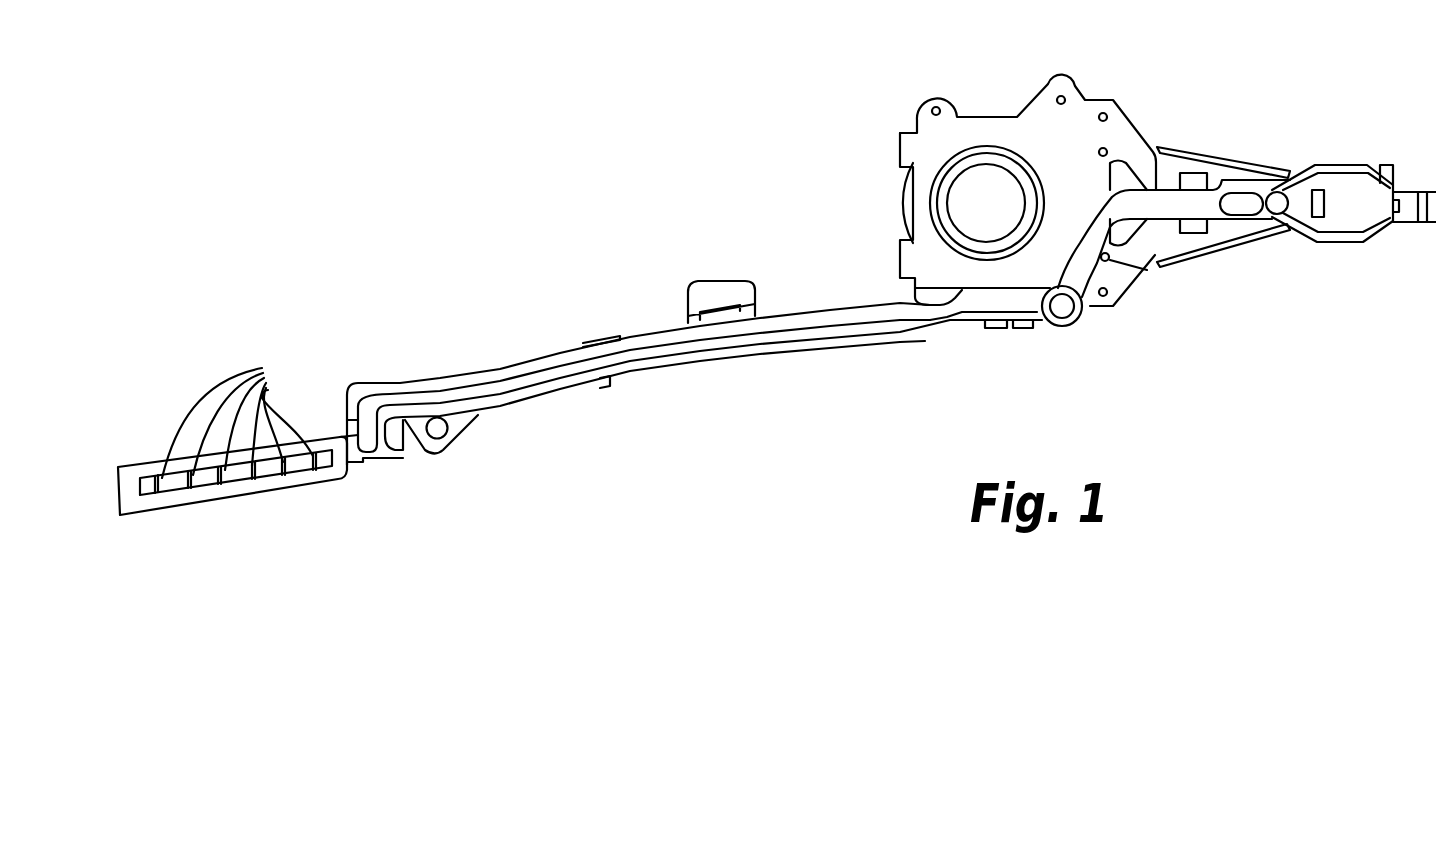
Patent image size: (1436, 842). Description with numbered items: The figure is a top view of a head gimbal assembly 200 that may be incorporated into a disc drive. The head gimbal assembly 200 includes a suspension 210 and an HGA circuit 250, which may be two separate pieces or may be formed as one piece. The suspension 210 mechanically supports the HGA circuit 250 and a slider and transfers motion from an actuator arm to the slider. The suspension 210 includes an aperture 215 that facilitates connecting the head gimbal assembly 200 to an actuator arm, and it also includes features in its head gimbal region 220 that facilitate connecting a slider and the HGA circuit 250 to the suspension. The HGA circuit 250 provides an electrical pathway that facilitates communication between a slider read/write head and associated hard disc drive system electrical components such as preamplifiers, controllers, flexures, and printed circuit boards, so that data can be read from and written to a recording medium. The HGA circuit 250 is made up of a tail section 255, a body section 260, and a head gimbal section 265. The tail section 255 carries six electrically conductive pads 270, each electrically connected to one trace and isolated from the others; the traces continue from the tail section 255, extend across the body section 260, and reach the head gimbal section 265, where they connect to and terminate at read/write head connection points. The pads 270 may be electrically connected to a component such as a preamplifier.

The head gimbal assembly 200 is at (363, 286).
The suspension 210 is at (1068, 76).
The aperture 215 is at (958, 192).
The head gimbal region 220 is at (1297, 195).
The HGA circuit 250 is at (527, 358).
The tail section 255 is at (255, 490).
The body section 260 is at (655, 373).
The head gimbal section 265 is at (1320, 242).
The pads 270 is at (240, 420).